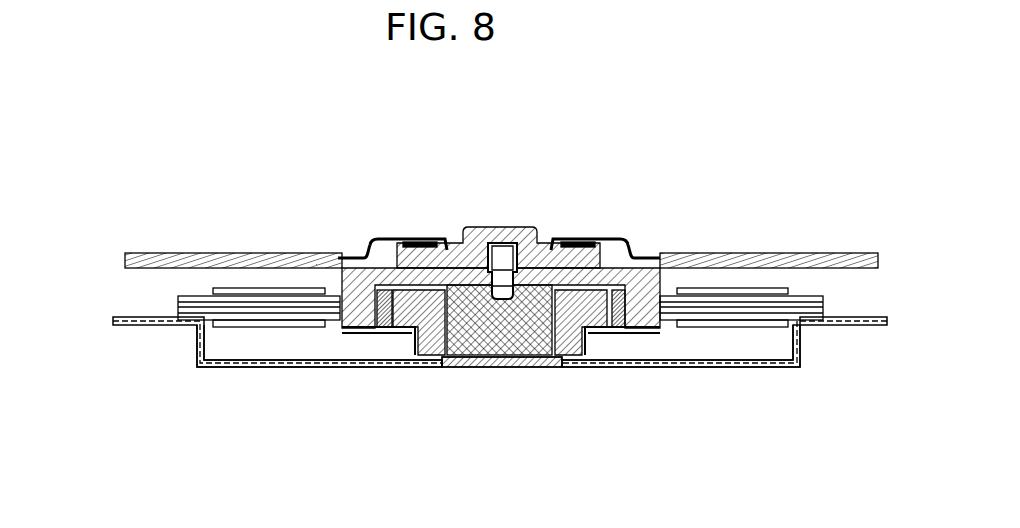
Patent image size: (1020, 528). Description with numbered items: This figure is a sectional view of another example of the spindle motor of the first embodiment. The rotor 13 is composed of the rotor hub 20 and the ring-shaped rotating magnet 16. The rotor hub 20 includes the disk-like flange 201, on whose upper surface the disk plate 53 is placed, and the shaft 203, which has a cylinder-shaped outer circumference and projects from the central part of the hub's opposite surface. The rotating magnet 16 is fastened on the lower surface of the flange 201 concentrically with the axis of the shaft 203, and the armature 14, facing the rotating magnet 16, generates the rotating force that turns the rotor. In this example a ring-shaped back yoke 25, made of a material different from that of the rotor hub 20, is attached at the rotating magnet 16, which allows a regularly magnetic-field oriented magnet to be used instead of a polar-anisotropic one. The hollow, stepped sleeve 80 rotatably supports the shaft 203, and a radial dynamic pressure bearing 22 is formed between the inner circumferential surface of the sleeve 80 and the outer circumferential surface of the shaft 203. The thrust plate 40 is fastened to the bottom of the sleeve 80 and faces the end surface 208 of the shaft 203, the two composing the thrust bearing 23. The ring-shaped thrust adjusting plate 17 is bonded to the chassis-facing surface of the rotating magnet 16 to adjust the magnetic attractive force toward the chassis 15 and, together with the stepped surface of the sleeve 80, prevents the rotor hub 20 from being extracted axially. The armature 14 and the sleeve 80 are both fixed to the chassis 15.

The rotor 13 is at (487, 210).
The rotating magnet 16 is at (358, 303).
The rotor hub 20 is at (458, 252).
The radial dynamic pressure bearing 22 is at (548, 300).
The flange 201 is at (590, 272).
The disk plate 53 is at (760, 263).
The chassis 15 is at (125, 328).
The armature 14 is at (195, 330).
The back yoke 25 is at (350, 333).
The thrust adjusting plate 17 is at (378, 333).
The sleeve 80 is at (418, 327).
The end surface 208 is at (482, 367).
The thrust plate 40 is at (502, 367).
The shaft 203 is at (530, 327).
The thrust bearing 23 is at (494, 433).